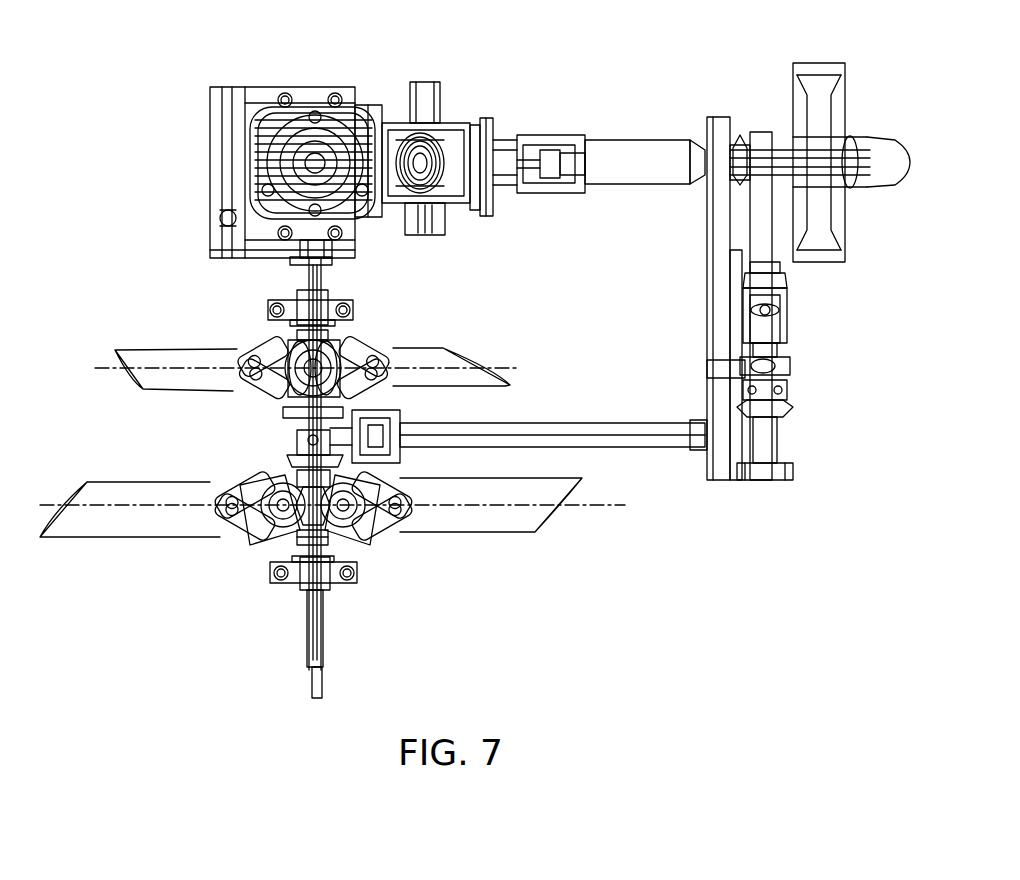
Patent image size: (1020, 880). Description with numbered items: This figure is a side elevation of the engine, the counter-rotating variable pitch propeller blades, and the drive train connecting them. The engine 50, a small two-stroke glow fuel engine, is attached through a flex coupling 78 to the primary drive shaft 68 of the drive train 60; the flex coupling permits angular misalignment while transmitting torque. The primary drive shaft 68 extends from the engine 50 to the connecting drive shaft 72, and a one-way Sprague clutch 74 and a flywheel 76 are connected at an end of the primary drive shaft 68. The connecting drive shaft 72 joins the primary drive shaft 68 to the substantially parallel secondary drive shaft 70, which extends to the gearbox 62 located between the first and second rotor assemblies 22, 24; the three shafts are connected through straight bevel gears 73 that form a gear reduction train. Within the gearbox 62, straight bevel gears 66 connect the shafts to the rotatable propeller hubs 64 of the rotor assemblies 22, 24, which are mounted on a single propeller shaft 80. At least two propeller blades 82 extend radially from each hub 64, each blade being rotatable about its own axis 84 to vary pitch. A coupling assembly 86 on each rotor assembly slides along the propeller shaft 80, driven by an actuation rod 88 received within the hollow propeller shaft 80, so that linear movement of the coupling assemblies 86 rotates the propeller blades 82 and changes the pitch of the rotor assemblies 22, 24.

The engine 50 is at (328, 80).
The flex coupling 78 is at (480, 122).
The drive train 60 is at (655, 120).
The primary drive shaft 68 is at (655, 186).
The bevel gears 73 is at (740, 135).
The flywheel 76 is at (828, 68).
The one-way Sprague clutch 74 is at (790, 297).
The connecting drive shaft 72 is at (800, 330).
The secondary drive shaft 70 is at (672, 449).
The propeller shaft 80 is at (322, 284).
The coupling assembly 86 is at (353, 310).
The propeller hub 64 is at (336, 338).
The bevel gears 66 is at (290, 462).
The gearbox 62 is at (272, 436).
The second rotor assembly 24 is at (472, 338).
The first rotor assembly 22 is at (519, 548).
The propeller blades 82 is at (178, 350).
The propeller blade axis 84 is at (519, 365).
The actuation rod 88 is at (323, 684).